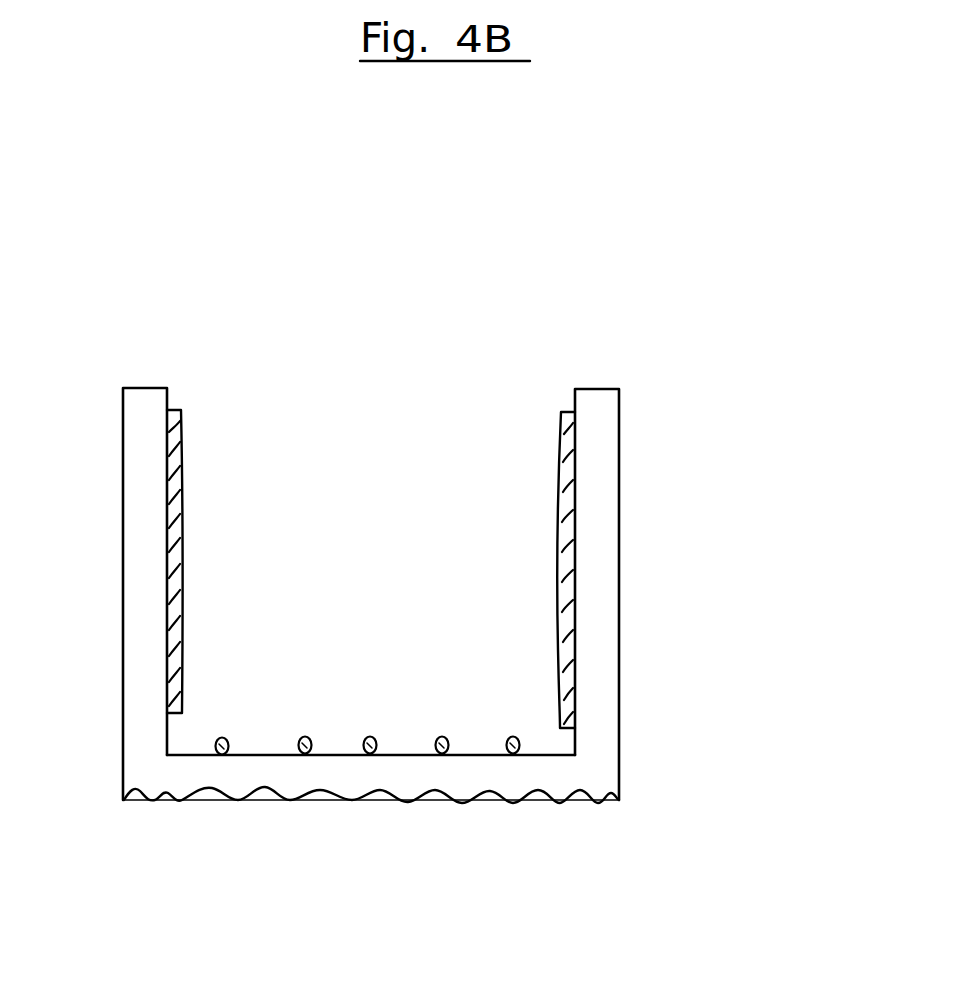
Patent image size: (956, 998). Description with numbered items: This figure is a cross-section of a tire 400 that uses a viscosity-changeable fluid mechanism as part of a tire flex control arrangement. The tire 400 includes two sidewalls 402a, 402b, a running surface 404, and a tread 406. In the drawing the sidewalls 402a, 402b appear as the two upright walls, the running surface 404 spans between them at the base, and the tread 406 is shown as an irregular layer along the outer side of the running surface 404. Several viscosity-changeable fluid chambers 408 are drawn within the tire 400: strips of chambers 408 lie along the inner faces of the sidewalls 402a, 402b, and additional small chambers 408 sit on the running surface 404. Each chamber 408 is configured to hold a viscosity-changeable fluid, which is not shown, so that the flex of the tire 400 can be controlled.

The tire 400 is at (855, 915).
The sidewall 402a is at (603, 398).
The sidewall 402b is at (135, 398).
The running surface 404 is at (152, 769).
The tread 406 is at (583, 803).
The viscosity-changeable fluid chamber 408 is at (182, 456).